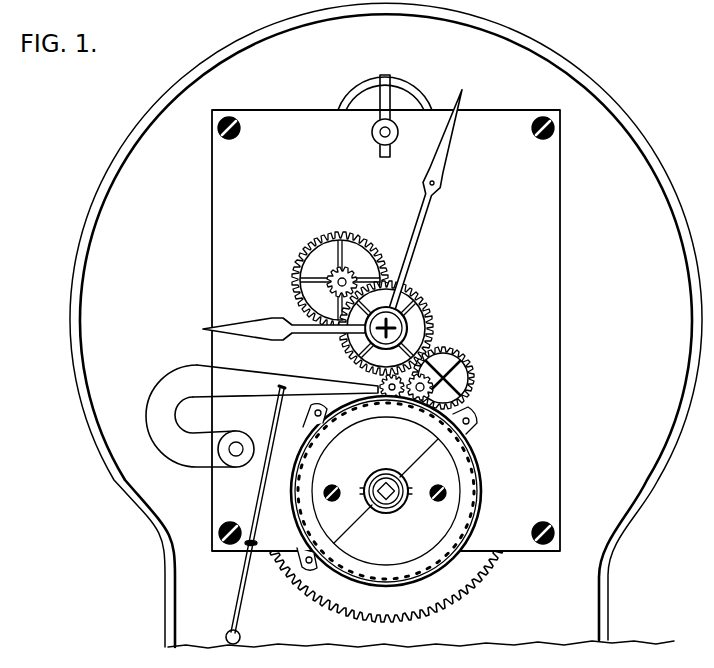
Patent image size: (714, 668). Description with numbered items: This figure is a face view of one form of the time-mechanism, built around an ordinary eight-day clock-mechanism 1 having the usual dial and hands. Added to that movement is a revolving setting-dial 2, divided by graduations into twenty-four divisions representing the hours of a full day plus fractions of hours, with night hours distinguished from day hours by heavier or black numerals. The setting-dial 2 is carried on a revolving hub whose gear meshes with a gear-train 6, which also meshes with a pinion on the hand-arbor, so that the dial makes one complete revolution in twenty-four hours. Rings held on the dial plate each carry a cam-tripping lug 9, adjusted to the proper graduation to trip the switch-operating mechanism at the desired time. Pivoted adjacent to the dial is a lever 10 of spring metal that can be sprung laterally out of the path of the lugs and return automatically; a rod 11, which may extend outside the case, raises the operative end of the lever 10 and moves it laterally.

The clock-mechanism 1 is at (550, 355).
The setting-dial 2 is at (465, 497).
The gear-train 6 is at (458, 360).
The cam-tripping lug 9 is at (372, 383).
The lever 10 is at (235, 378).
The rod 11 is at (262, 483).